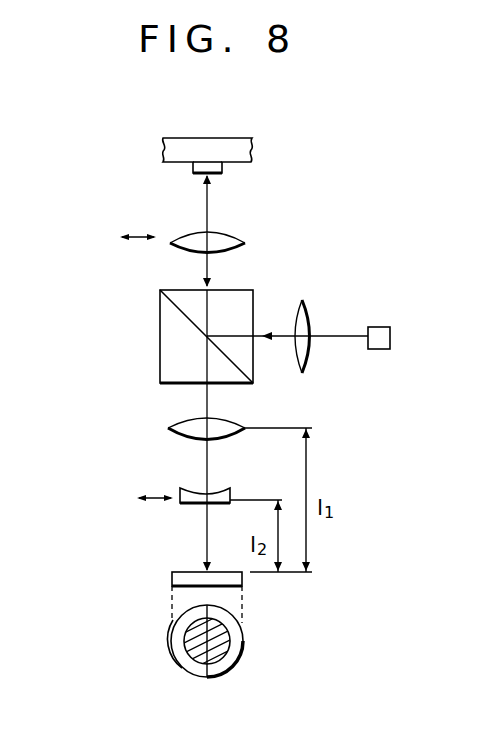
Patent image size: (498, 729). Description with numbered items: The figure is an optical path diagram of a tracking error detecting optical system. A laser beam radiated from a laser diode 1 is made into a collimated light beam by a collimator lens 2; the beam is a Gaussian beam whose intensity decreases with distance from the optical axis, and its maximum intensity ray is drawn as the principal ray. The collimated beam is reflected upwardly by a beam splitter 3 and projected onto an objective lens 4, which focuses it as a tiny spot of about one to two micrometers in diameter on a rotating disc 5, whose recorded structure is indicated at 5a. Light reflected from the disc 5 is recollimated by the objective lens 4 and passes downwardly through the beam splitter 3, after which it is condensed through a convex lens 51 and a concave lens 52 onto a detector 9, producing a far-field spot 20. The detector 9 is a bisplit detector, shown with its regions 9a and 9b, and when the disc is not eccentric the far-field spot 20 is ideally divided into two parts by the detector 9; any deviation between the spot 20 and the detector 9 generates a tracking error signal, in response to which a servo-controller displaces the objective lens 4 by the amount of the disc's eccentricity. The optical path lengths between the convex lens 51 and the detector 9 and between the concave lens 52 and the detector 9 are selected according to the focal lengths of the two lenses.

The laser diode 1 is at (377, 327).
The collimator lens 2 is at (303, 300).
The beam splitter 3 is at (255, 303).
The objective lens 4 is at (243, 243).
The rotating disc 5 is at (237, 139).
The pit on optical disk 5a is at (196, 170).
The convex lens 51 is at (232, 421).
The concave lens 52 is at (232, 492).
The detector 9 is at (243, 581).
The photodetector outer region 9a is at (173, 651).
The photodetector light receiving area 9b is at (244, 638).
The far-field spot 20 is at (216, 660).